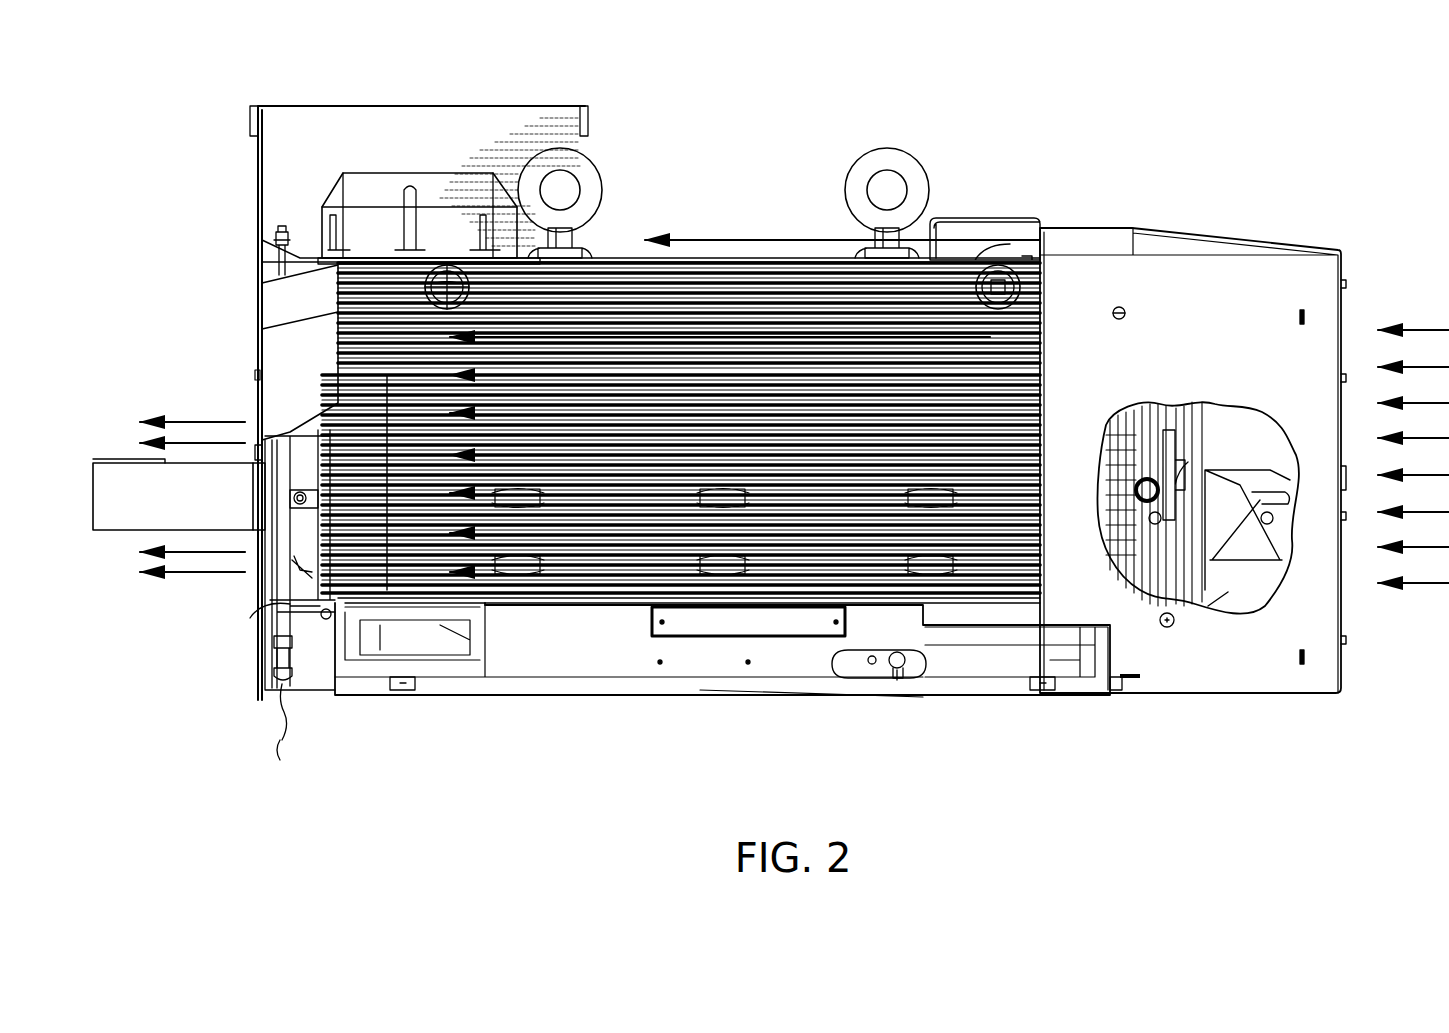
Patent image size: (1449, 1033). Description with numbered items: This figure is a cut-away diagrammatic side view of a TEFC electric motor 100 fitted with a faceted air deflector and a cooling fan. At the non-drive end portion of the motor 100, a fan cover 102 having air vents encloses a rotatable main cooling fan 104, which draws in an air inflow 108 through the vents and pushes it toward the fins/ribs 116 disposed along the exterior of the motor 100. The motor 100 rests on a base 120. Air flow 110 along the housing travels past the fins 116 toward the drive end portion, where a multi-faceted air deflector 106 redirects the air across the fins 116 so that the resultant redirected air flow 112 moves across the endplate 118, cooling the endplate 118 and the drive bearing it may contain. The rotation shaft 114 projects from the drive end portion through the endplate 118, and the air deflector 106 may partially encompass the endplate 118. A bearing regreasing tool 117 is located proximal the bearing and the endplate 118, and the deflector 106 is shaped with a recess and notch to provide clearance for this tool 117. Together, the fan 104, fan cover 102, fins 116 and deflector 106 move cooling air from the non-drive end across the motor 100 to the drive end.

The TEFC electric motor 100 is at (1102, 154).
The fan cover 102 is at (1220, 283).
The main cooling fan 104 is at (1238, 560).
The multi-faceted air deflector 106 is at (292, 358).
The air inflow 108 is at (1414, 338).
The airflow along housing 110 is at (738, 240).
The redirected air flow 112 is at (176, 420).
The rotation shaft 114 is at (108, 478).
The fins/ribs 116 is at (455, 545).
The bearing regreasing tool 117 is at (285, 680).
The endplate 118 is at (292, 612).
The base 120 is at (960, 698).